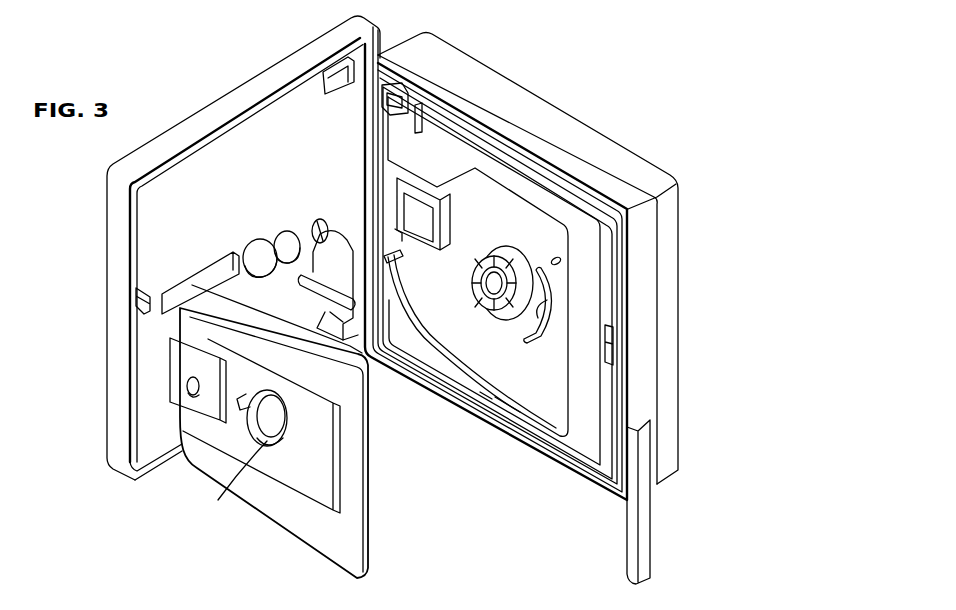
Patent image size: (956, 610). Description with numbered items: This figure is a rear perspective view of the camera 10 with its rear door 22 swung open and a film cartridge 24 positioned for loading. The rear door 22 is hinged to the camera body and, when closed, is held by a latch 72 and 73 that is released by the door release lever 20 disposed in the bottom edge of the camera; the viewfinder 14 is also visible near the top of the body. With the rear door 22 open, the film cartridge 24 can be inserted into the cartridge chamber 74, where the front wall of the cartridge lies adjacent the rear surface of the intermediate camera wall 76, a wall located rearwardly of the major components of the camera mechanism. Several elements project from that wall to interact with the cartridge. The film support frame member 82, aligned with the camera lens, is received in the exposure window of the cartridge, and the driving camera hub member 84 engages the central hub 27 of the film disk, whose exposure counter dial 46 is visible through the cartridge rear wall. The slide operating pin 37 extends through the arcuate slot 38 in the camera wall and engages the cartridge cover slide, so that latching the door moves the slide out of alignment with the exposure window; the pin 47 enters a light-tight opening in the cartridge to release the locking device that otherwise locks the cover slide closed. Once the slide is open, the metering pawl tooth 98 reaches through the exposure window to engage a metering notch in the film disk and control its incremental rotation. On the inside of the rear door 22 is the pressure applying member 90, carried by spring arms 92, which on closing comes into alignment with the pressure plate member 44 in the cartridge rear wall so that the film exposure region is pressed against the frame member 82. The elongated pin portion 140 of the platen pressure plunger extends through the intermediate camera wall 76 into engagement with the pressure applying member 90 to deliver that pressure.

The camera 10 is at (516, 305).
The viewfinder 14 is at (384, 104).
The door release lever 20 is at (650, 522).
The rear door 22 is at (216, 104).
The film cartridge 24 is at (380, 482).
The central hub 27 is at (231, 476).
The slide operating pin 37 is at (545, 338).
The arcuate slot 38 is at (545, 313).
The pressure plate member 44 is at (194, 396).
The exposure counter dial 46 is at (243, 395).
The pin 47 is at (554, 258).
The latch 72 is at (612, 350).
The latch 73 is at (145, 292).
The cartridge chamber 74 is at (489, 369).
The intermediate camera wall 76 is at (462, 309).
The film support frame member 82 is at (446, 217).
The driving camera hub member 84 is at (492, 310).
The pressure applying member 90 is at (320, 220).
The spring arms 92 is at (316, 285).
The metering pawl tooth 98 is at (401, 240).
The elongated pin portion 140 is at (398, 293).